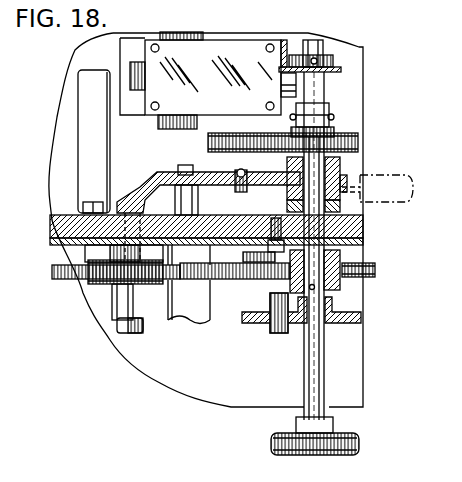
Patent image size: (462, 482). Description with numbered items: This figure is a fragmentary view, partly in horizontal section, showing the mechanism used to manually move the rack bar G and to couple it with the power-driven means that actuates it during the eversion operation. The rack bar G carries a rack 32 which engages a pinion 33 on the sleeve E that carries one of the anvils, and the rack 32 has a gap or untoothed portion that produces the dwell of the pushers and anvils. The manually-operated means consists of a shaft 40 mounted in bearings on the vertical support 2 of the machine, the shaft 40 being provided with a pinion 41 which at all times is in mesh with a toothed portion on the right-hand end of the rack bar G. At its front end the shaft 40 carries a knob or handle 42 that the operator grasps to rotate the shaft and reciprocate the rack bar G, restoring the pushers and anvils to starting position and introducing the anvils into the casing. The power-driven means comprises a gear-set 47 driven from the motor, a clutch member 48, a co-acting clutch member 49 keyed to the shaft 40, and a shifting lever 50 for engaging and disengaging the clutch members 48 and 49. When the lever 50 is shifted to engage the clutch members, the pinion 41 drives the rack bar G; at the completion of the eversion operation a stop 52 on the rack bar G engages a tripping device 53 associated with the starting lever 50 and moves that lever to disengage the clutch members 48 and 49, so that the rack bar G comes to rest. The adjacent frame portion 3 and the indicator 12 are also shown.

The vertical support 2 is at (60, 228).
The housing 3 is at (358, 377).
The section indicator 12 is at (366, 5).
The rack 32 is at (375, 272).
The pinion 33 is at (100, 285).
The shaft 40 is at (313, 352).
The pinion 41 is at (345, 282).
The knob or handle 42 is at (360, 445).
The gear-set 47 is at (205, 55).
The clutch member 48 is at (347, 160).
The co-acting clutch member 49 is at (342, 173).
The shifting lever 50 is at (217, 172).
The stop 52 is at (257, 263).
The tripping device 53 is at (133, 200).
The rack bar G is at (52, 270).
The sleeve E is at (135, 320).